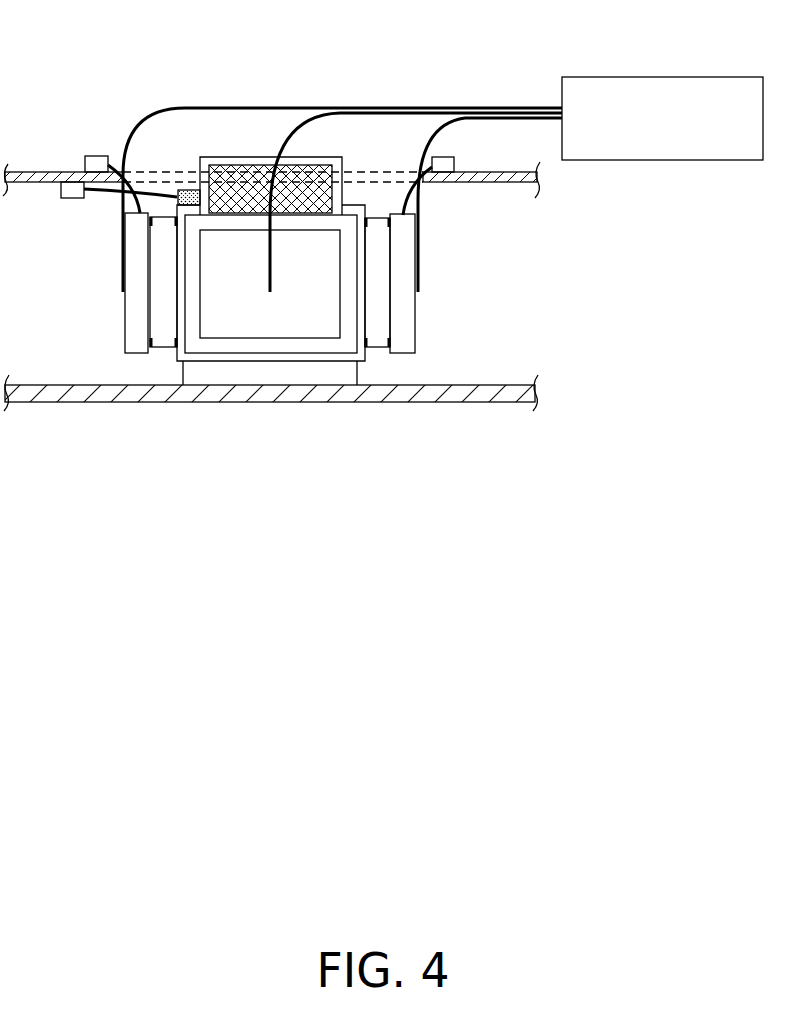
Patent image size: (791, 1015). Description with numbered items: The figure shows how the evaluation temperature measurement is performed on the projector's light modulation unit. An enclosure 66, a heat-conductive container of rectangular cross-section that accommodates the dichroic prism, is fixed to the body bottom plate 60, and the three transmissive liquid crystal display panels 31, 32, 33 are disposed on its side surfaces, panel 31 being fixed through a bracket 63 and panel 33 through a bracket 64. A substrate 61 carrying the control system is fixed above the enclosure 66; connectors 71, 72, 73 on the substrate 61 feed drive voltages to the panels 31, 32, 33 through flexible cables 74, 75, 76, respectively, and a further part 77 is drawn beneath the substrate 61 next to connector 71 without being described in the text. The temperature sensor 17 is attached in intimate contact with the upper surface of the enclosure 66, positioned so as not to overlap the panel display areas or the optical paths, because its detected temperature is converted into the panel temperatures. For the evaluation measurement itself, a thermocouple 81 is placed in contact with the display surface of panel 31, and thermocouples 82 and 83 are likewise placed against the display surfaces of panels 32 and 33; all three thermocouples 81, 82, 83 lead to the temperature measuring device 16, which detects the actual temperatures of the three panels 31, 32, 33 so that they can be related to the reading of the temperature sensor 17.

The temperature measuring device 16 is at (665, 77).
The temperature sensor 17 is at (190, 190).
The liquid crystal display panel 31 is at (135, 330).
The liquid crystal display panel 32 is at (225, 345).
The liquid crystal display panel 33 is at (410, 338).
The body bottom plate 60 is at (478, 392).
The substrate 61 is at (33, 172).
The bracket 63 is at (160, 352).
The bracket 64 is at (375, 350).
The enclosure 66 is at (352, 212).
The connector 71 is at (100, 156).
The connector 72 is at (260, 157).
The connector 73 is at (454, 164).
The flexible cable 74 is at (134, 192).
The flexible cable 75 is at (233, 172).
The flexible cable 76 is at (411, 170).
The third fixing member 77 is at (72, 198).
The thermocouple 81 is at (122, 275).
The thermocouple 82 is at (272, 276).
The thermocouple 83 is at (420, 292).